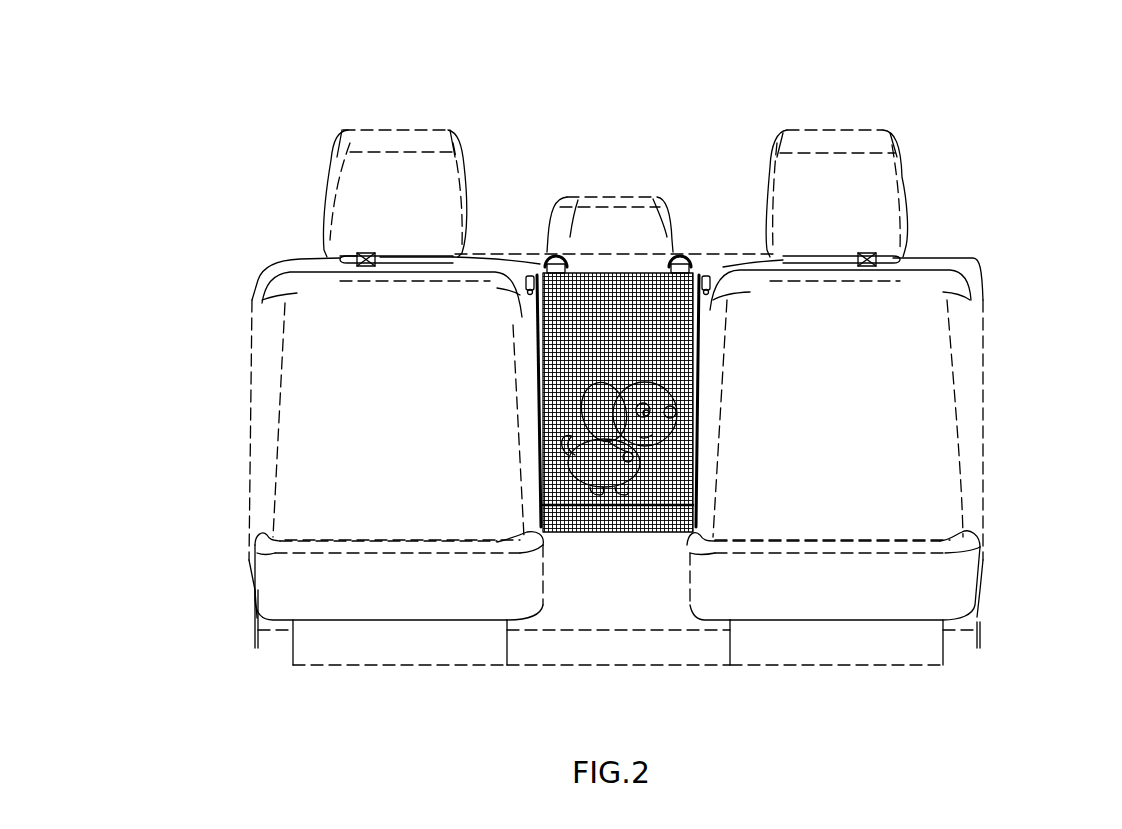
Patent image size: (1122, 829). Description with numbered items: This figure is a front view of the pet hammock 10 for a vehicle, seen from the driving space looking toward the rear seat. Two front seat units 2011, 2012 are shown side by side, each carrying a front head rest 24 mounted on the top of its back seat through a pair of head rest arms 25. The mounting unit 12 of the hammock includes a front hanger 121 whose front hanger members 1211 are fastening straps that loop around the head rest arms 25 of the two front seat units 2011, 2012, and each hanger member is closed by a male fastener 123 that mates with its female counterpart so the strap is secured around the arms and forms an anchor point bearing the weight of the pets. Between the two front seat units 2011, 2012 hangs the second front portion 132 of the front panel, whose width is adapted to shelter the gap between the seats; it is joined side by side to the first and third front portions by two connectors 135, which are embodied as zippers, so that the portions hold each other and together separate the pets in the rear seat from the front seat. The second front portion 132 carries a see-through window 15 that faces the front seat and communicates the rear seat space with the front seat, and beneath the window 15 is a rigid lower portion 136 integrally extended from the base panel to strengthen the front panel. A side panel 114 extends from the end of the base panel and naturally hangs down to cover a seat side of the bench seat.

The pet hammock 10 is at (165, 80).
The mounting unit 12 is at (155, 142).
The front hanger 121 is at (247, 150).
The front hanger member 1211 is at (400, 258).
The male fastener 123 is at (340, 257).
The head rest 24 is at (397, 142).
The head rest arms 25 is at (405, 237).
The second front portion 132 is at (610, 290).
The connector 135 is at (528, 272).
The lower portion 136 is at (633, 517).
The window 15 is at (568, 513).
The front seat unit 2011 is at (933, 387).
The front seat unit 2012 is at (300, 410).
The side panel 114 is at (257, 613).